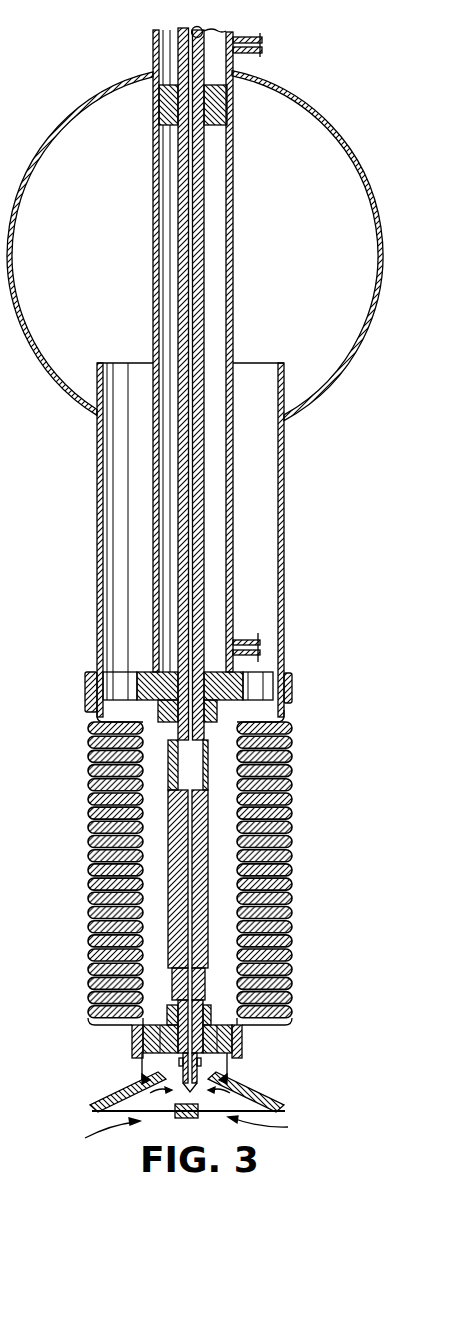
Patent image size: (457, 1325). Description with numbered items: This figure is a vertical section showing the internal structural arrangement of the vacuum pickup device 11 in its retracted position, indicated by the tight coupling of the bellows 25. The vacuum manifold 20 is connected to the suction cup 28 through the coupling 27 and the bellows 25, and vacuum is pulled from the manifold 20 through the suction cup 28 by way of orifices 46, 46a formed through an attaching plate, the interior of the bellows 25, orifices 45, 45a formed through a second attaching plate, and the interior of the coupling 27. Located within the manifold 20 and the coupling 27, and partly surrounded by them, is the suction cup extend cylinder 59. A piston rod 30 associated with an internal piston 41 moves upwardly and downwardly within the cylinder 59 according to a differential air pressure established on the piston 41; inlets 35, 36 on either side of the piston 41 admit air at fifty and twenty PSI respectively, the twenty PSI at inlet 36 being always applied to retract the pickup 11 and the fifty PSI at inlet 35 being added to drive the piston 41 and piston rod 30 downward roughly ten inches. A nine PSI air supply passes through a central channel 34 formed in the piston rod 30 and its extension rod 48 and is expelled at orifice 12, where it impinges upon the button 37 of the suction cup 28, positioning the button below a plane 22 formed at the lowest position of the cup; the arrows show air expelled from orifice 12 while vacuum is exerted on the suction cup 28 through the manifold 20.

The vacuum pickup device 11 is at (308, 712).
The orifice 12 is at (133, 1080).
The vacuum manifold 20 is at (322, 110).
The plane 22 is at (107, 1113).
The bellows 25 is at (292, 780).
The coupling 27 is at (285, 540).
The suction cup 28 is at (270, 1102).
The piston rod 30 is at (175, 445).
The central opening or channel 34 is at (199, 27).
The inlet 35 is at (264, 45).
The inlet 36 is at (256, 647).
The button 37 is at (196, 1118).
The piston 41 is at (208, 126).
The orifice 45 is at (263, 680).
The orifice 45a is at (128, 683).
The orifice 46 is at (243, 1040).
The orifice 46a is at (138, 1045).
The extension rod 48 is at (208, 912).
The suction cup extend cylinder 59 is at (233, 459).